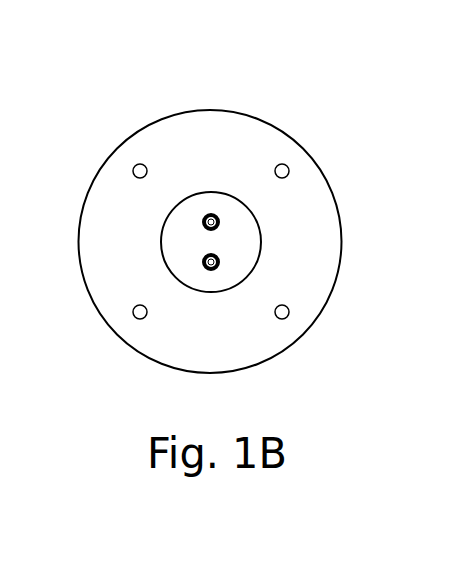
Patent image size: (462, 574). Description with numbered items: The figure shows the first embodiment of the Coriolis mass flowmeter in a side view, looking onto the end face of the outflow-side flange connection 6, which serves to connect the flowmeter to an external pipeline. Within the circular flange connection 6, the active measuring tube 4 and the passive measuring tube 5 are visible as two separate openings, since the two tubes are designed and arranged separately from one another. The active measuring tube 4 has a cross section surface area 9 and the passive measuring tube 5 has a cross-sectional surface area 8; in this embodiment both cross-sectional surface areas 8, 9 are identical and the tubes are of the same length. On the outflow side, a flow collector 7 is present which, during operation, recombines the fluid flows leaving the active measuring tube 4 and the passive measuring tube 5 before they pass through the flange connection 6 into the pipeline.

The flange connection 6 is at (288, 106).
The flow collector 7 is at (232, 270).
The cross section surface area 9 is at (212, 214).
The active measuring tube 4 is at (219, 220).
The cross-sectional surface area 8 is at (207, 266).
The passive measuring tube 5 is at (219, 259).